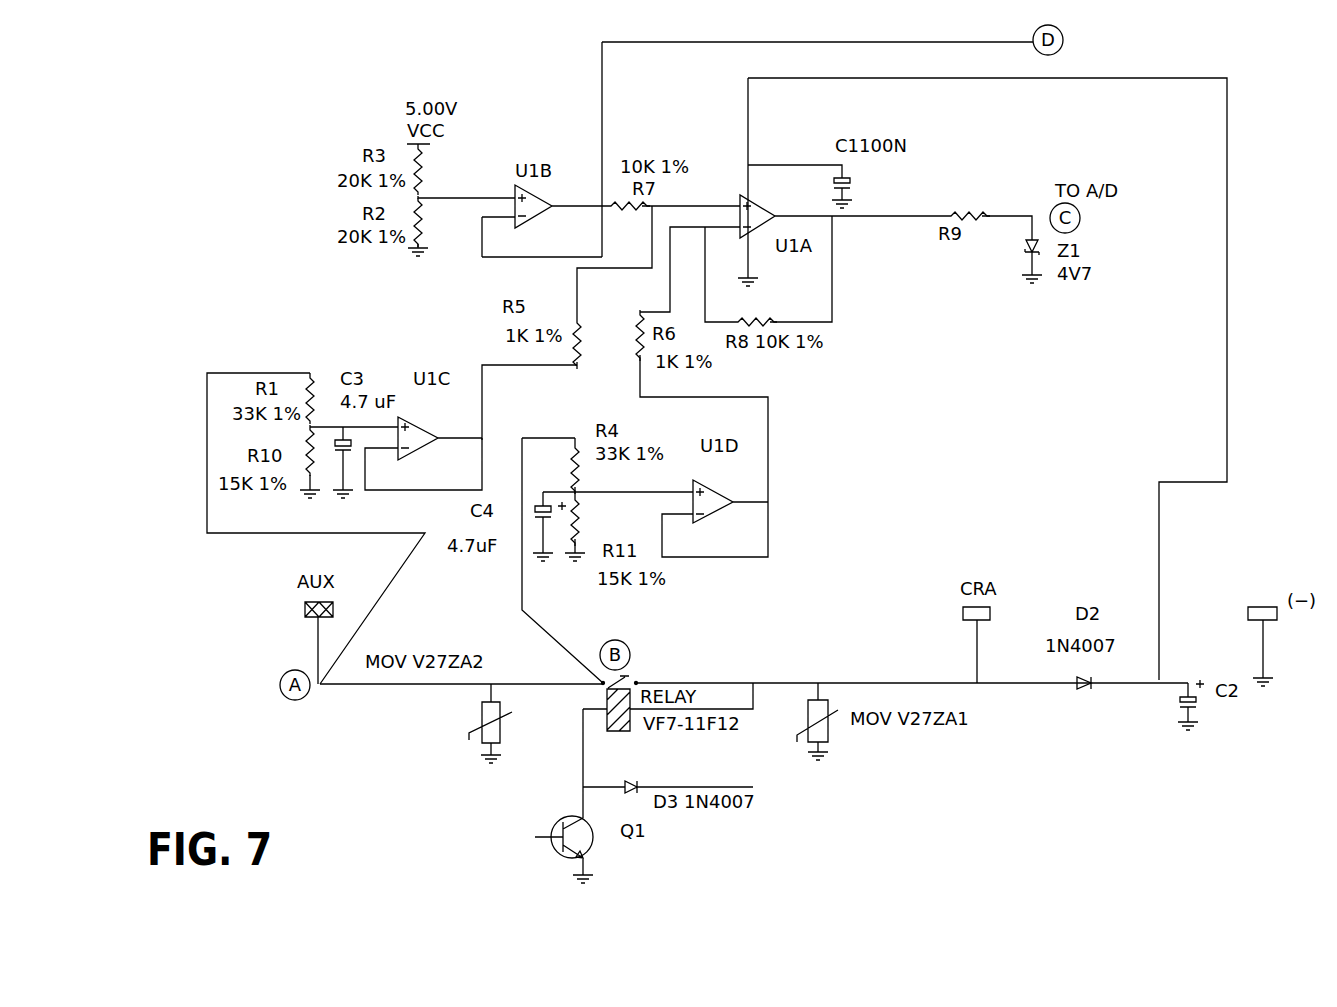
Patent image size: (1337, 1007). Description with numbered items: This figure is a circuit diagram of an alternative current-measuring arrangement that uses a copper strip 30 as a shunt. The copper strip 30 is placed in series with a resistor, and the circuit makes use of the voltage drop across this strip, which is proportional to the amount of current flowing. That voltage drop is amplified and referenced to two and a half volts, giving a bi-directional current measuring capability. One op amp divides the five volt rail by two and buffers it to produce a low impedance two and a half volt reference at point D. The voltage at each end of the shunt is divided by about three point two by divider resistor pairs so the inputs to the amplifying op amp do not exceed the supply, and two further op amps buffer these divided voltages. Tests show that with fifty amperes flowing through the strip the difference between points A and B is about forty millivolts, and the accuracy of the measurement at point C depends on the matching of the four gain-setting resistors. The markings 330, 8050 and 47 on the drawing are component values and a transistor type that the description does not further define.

The copper strip 30 is at (438, 686).
The resistor R9 330 ohm 330 is at (964, 239).
The transistor Q1 8050c 8050 is at (605, 849).
The capacitor C2 47uF 47 is at (1224, 705).